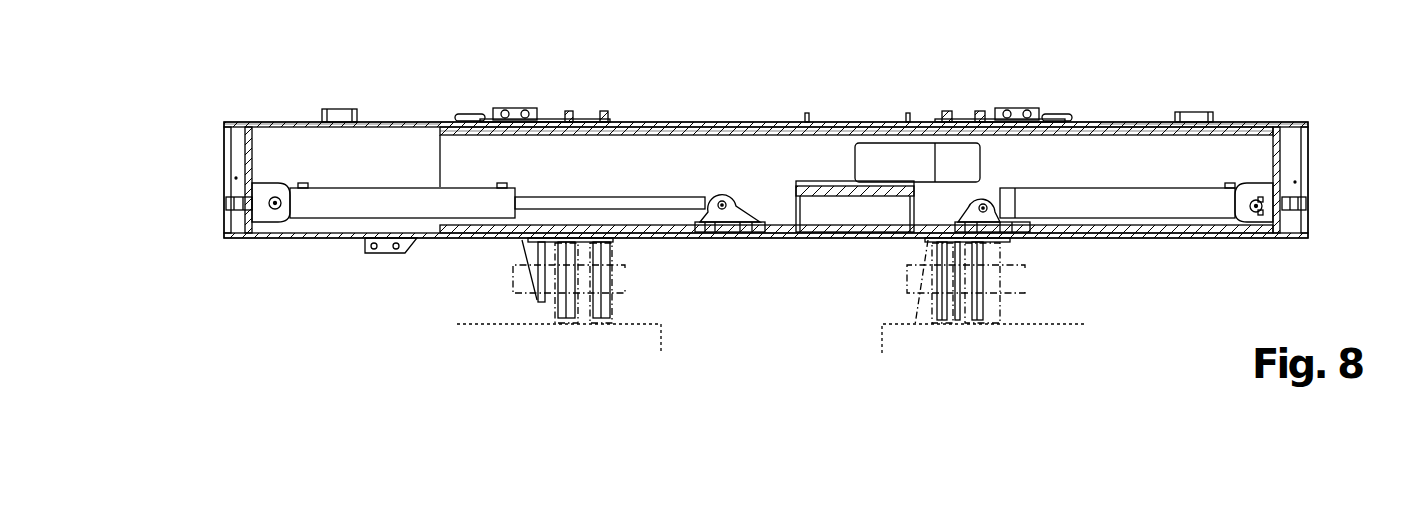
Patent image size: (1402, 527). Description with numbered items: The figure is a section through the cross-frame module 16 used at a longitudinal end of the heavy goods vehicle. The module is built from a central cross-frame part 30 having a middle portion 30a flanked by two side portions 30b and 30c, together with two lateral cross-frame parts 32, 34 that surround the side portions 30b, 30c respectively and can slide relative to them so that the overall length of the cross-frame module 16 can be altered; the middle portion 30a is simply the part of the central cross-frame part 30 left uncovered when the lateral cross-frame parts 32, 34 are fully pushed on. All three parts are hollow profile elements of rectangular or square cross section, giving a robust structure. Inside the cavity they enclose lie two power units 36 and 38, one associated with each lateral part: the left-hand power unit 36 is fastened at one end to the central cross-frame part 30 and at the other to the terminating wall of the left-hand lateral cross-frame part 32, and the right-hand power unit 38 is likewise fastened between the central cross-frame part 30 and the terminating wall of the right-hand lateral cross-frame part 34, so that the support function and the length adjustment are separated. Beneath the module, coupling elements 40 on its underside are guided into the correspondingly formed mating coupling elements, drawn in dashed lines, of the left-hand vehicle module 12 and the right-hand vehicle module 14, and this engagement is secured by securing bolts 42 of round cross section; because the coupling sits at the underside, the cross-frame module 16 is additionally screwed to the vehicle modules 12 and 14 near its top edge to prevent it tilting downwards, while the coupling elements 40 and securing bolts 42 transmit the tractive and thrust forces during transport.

The cross-frame module 16 is at (238, 80).
The central cross-frame part 30 is at (876, 128).
The middle portion 30a is at (843, 128).
The side portion 30b is at (633, 128).
The side portion 30c is at (1057, 132).
The lateral cross-frame part 32 is at (404, 124).
The lateral cross-frame part 34 is at (1132, 125).
The power unit 36 is at (367, 207).
The power unit 38 is at (1160, 213).
The coupling elements 40 is at (600, 313).
The securing bolts 42 is at (612, 283).
The vehicle module 12 is at (484, 391).
The vehicle module 14 is at (1144, 387).